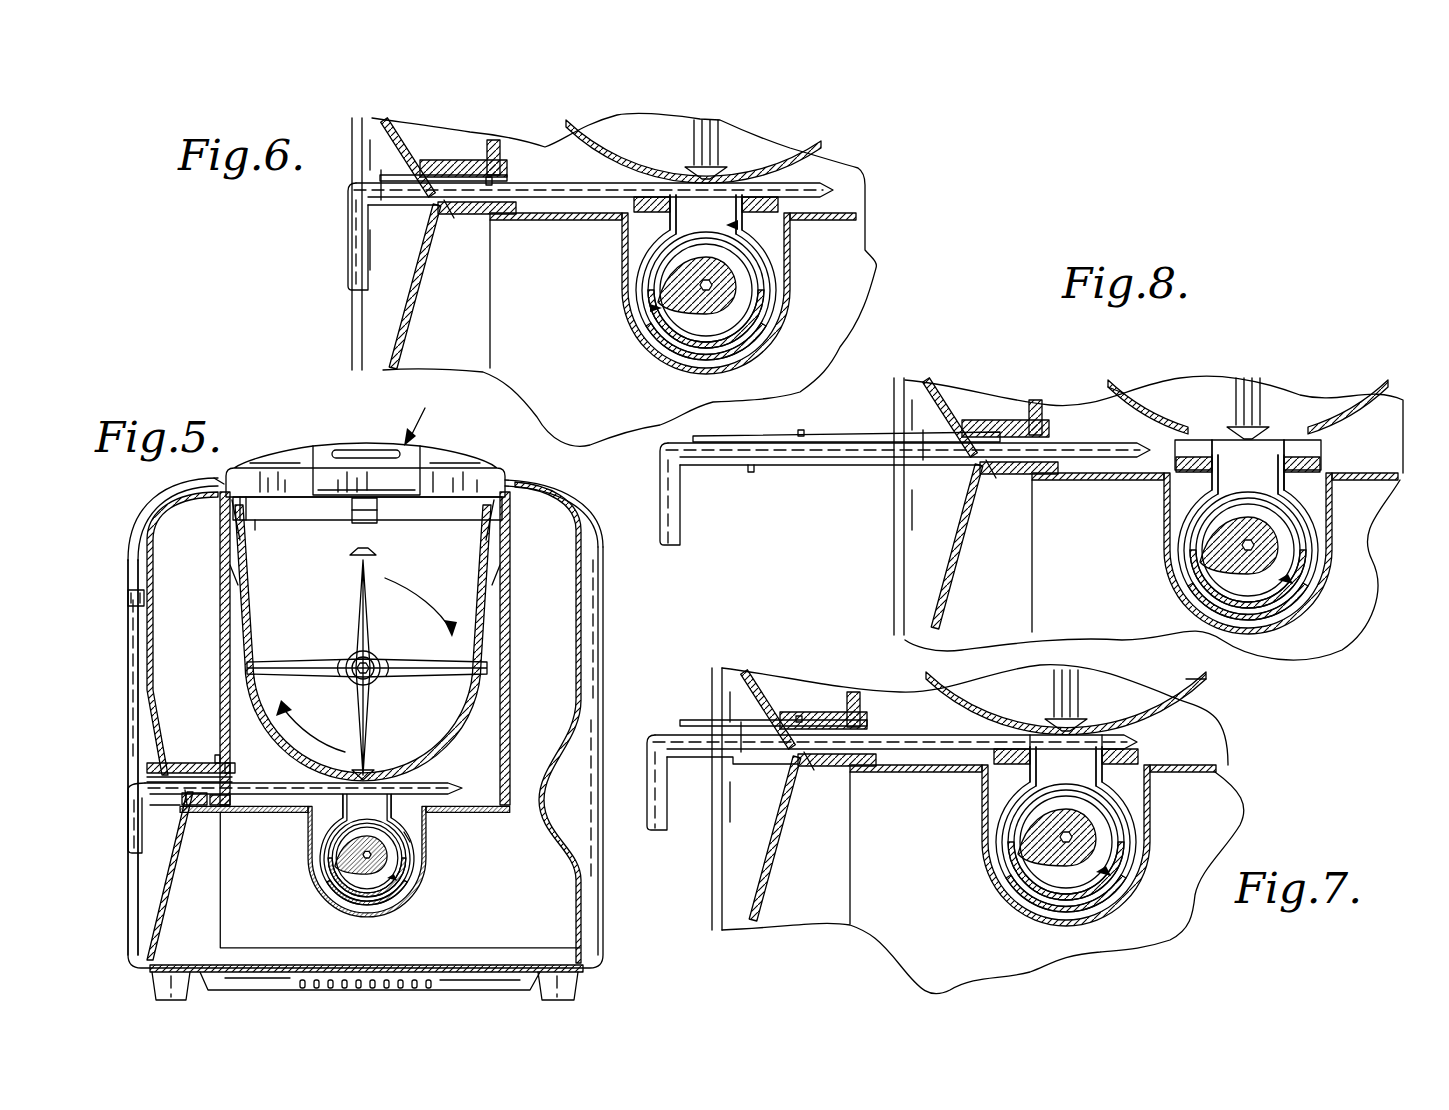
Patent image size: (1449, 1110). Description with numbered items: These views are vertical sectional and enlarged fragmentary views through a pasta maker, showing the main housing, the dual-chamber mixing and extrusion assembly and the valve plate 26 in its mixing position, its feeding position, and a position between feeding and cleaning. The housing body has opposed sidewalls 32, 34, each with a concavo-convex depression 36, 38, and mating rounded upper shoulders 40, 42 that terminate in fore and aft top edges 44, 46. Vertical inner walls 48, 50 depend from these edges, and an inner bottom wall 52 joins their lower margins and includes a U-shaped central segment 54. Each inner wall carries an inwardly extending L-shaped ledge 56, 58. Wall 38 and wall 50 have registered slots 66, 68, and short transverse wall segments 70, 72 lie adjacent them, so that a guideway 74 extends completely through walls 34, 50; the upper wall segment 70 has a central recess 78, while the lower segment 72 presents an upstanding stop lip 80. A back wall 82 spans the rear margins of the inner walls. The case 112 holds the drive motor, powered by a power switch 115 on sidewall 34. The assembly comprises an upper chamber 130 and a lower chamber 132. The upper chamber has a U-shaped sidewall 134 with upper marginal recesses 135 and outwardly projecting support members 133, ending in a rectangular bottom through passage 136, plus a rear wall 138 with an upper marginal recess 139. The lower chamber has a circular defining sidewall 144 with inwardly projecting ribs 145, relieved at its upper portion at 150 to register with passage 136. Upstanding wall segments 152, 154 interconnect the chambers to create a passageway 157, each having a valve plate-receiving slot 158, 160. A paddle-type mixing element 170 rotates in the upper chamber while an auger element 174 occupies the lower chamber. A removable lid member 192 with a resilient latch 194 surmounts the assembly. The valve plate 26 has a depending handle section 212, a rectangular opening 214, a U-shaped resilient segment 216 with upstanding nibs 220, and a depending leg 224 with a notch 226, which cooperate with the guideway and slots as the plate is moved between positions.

In FIG. 6, the valve plate 26 is at (325, 190).
In FIG. 8, the valve plate 26 is at (873, 505).
In FIG. 5, the sidewall 32 is at (595, 640).
In FIG. 6, the sidewall 34 is at (400, 310).
In FIG. 8, the sidewall 34 is at (960, 530).
In FIG. 7, the sidewall 34 is at (740, 690).
In FIG. 5, the sidewall 34 is at (135, 640).
In FIG. 5, the concavo-convex depression 36 is at (555, 830).
In FIG. 6, the concavo-convex depression 38 is at (411, 243).
In FIG. 8, the concavo-convex depression 38 is at (935, 585).
In FIG. 7, the concavo-convex depression 38 is at (771, 795).
In FIG. 5, the concavo-convex depression 38 is at (150, 745).
In FIG. 5, the rounded upper shoulder 40 is at (560, 495).
In FIG. 5, the rounded upper shoulder 42 is at (135, 535).
In FIG. 5, the top edge 44 is at (505, 495).
In FIG. 5, the top edge 46 is at (216, 478).
In FIG. 5, the vertical inner wall 48 is at (510, 690).
In FIG. 5, the vertical inner wall 50 is at (220, 660).
In FIG. 6, the inner bottom wall 52 is at (835, 218).
In FIG. 8, the inner bottom wall 52 is at (1095, 480).
In FIG. 7, the inner bottom wall 52 is at (1210, 770).
In FIG. 5, the inner bottom wall 52 is at (465, 808).
In FIG. 6, the central segment 54 is at (770, 345).
In FIG. 8, the central segment 54 is at (1180, 596).
In FIG. 7, the central segment 54 is at (1080, 920).
In FIG. 5, the central segment 54 is at (395, 905).
In FIG. 5, the L-shaped ledge 56 is at (503, 575).
In FIG. 5, the L-shaped ledge 58 is at (232, 575).
In FIG. 5, the slot 66 is at (148, 778).
In FIG. 5, the slot 68 is at (235, 770).
In FIG. 6, the upper transverse wall segment 70 is at (445, 160).
In FIG. 8, the upper transverse wall segment 70 is at (985, 420).
In FIG. 7, the upper transverse wall segment 70 is at (823, 720).
In FIG. 5, the upper transverse wall segment 70 is at (188, 760).
In FIG. 6, the lower transverse wall segment 72 is at (470, 213).
In FIG. 8, the lower transverse wall segment 72 is at (1030, 472).
In FIG. 7, the lower transverse wall segment 72 is at (830, 772).
In FIG. 5, the lower transverse wall segment 72 is at (226, 808).
In FIG. 5, the valve plate guideway 74 is at (300, 735).
In FIG. 6, the central recess 78 is at (495, 145).
In FIG. 8, the central recess 78 is at (1035, 400).
In FIG. 7, the central recess 78 is at (860, 700).
In FIG. 6, the stop lip 80 is at (455, 215).
In FIG. 8, the stop lip 80 is at (995, 470).
In FIG. 7, the stop lip 80 is at (815, 770).
In FIG. 5, the stop lip 80 is at (194, 806).
In FIG. 5, the back wall 82 is at (445, 520).
In FIG. 5, the case 112 is at (160, 990).
In FIG. 5, the power switch 115 is at (128, 595).
In FIG. 8, the upper chamber 130 is at (1145, 400).
In FIG. 5, the upper chamber 130 is at (330, 545).
In FIG. 5, the lower chamber 132 is at (405, 838).
In FIG. 5, the support member 133 is at (222, 540).
In FIG. 6, the sidewall 134 is at (790, 160).
In FIG. 8, the sidewall 134 is at (1145, 420).
In FIG. 7, the sidewall 134 is at (970, 712).
In FIG. 5, the sidewall 134 is at (245, 630).
In FIG. 5, the upper marginal recess 135 is at (246, 497).
In FIG. 8, the bottom through passage 136 is at (1285, 420).
In FIG. 7, the bottom through passage 136 is at (1090, 735).
In FIG. 5, the rear wall 138 is at (367, 664).
In FIG. 5, the upper marginal recess 139 is at (255, 520).
In FIG. 6, the defining sidewall 144 is at (670, 350).
In FIG. 8, the defining sidewall 144 is at (1230, 625).
In FIG. 7, the defining sidewall 144 is at (1050, 900).
In FIG. 5, the defining sidewall 144 is at (340, 908).
In FIG. 6, the rib 145 is at (760, 312).
In FIG. 8, the rib 145 is at (1260, 610).
In FIG. 7, the rib 145 is at (1010, 880).
In FIG. 5, the rib 145 is at (330, 880).
In FIG. 6, the relieved upper portion 150 is at (710, 205).
In FIG. 8, the relieved upper portion 150 is at (1225, 490).
In FIG. 7, the relieved upper portion 150 is at (1100, 760).
In FIG. 8, the wall segment 152 is at (1248, 451).
In FIG. 8, the wall segment 154 is at (1285, 490).
In FIG. 6, the passageway 157 is at (745, 215).
In FIG. 8, the passageway 157 is at (1235, 455).
In FIG. 7, the passageway 157 is at (1100, 770).
In FIG. 5, the passageway 157 is at (340, 805).
In FIG. 8, the valve plate-receiving slot 158 is at (1195, 455).
In FIG. 8, the valve plate-receiving slot 160 is at (1310, 440).
In FIG. 6, the mixing element 170 is at (700, 155).
In FIG. 8, the mixing element 170 is at (1255, 385).
In FIG. 7, the mixing element 170 is at (1060, 690).
In FIG. 6, the auger element 174 is at (652, 308).
In FIG. 8, the auger element 174 is at (1287, 578).
In FIG. 7, the auger element 174 is at (1103, 873).
In FIG. 5, the auger element 174 is at (385, 870).
In FIG. 5, the lid member 192 is at (432, 415).
In FIG. 5, the resilient latch 194 is at (365, 445).
In FIG. 6, the handle section 212 is at (355, 265).
In FIG. 8, the handle section 212 is at (682, 530).
In FIG. 7, the handle section 212 is at (660, 830).
In FIG. 5, the handle section 212 is at (132, 820).
In FIG. 7, the rectangular opening 214 is at (1066, 757).
In FIG. 6, the U-shaped resilient segment 216 is at (420, 165).
In FIG. 8, the U-shaped resilient segment 216 is at (720, 438).
In FIG. 7, the U-shaped resilient segment 216 is at (773, 723).
In FIG. 6, the nib 220 is at (490, 180).
In FIG. 8, the nib 220 is at (800, 435).
In FIG. 7, the nib 220 is at (798, 718).
In FIG. 5, the nib 220 is at (216, 756).
In FIG. 6, the depending leg 224 is at (593, 194).
In FIG. 8, the depending leg 224 is at (830, 465).
In FIG. 7, the depending leg 224 is at (900, 750).
In FIG. 5, the depending leg 224 is at (262, 792).
In FIG. 6, the notch 226 is at (437, 205).
In FIG. 8, the notch 226 is at (750, 465).
In FIG. 7, the notch 226 is at (745, 750).
In FIG. 5, the notch 226 is at (182, 800).